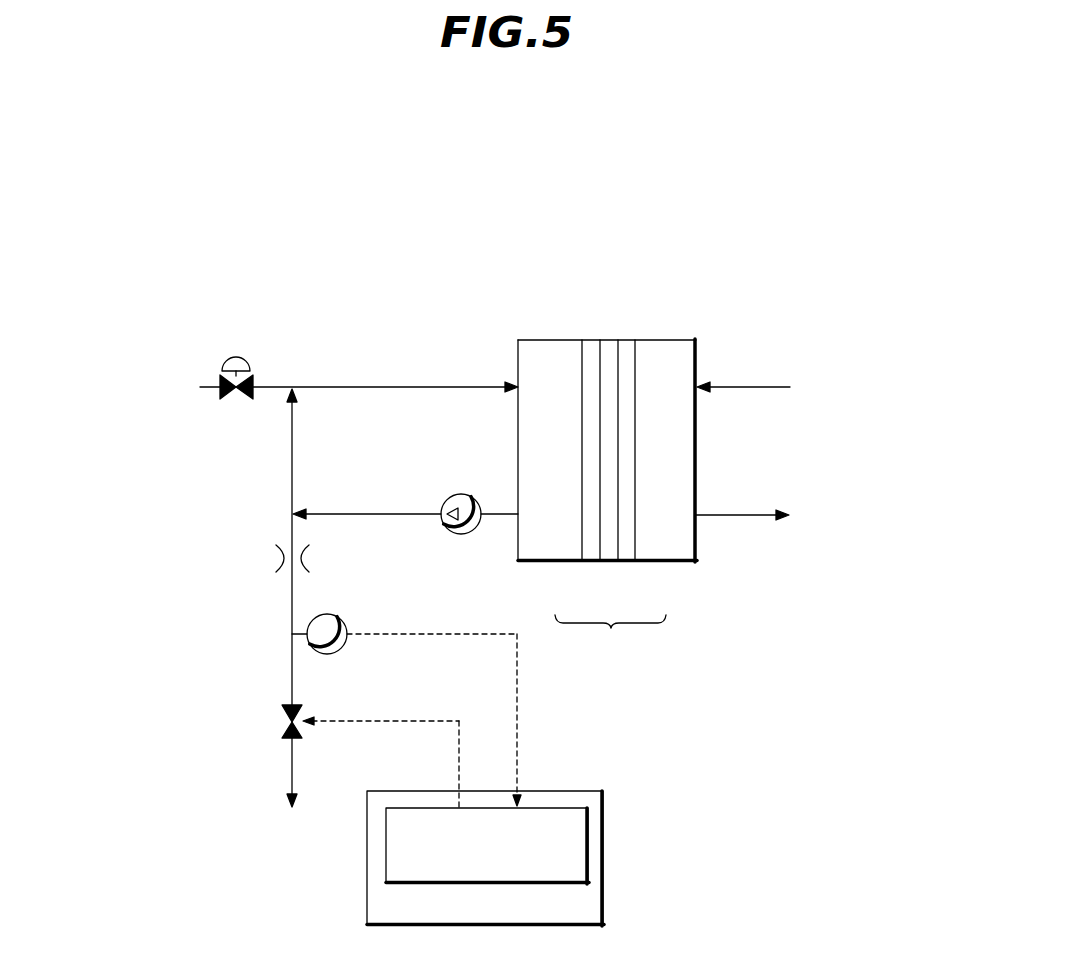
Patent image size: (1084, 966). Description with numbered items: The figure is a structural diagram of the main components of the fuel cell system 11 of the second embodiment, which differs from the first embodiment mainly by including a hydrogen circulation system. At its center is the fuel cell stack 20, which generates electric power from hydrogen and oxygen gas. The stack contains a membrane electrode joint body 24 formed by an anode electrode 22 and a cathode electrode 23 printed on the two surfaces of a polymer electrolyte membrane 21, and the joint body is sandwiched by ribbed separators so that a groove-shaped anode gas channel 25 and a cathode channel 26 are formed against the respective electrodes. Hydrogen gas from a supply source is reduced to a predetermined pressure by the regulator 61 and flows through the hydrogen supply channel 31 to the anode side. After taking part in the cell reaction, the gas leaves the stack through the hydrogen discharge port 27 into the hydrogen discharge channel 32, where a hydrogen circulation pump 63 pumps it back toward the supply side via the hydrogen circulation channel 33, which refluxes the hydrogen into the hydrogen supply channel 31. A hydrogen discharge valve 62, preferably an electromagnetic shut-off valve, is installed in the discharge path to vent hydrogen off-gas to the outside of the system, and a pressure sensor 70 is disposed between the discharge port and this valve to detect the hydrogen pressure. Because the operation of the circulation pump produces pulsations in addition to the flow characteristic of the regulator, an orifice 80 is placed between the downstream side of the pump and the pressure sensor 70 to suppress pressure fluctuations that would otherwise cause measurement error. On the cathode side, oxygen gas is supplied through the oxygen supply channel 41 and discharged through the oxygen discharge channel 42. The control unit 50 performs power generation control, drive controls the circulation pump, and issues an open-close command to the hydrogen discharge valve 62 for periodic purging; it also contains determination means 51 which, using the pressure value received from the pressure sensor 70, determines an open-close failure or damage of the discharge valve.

The fuel cell system 11 is at (485, 262).
The fuel cell stack 20 is at (640, 333).
The polymer electrolyte membrane 21 is at (605, 553).
The anode electrode 22 is at (590, 553).
The cathode electrode 23 is at (625, 553).
The membrane electrode joint body 24 is at (610, 633).
The anode gas channel 25 is at (548, 553).
The cathode channel 26 is at (665, 553).
The hydrogen discharge port 27 is at (517, 518).
The hydrogen supply channel 31 is at (412, 386).
The hydrogen discharge channel 32 is at (410, 512).
The hydrogen circulation channel 33 is at (292, 485).
The oxygen supply channel 41 is at (740, 386).
The oxygen discharge channel 42 is at (736, 514).
The control unit 50 is at (605, 912).
The determination means 51 is at (590, 850).
The regulator 61 is at (237, 356).
The hydrogen discharge valve 62 is at (286, 722).
The hydrogen circulation pump 63 is at (463, 495).
The pressure sensor 70 is at (336, 616).
The orifice 80 is at (283, 573).